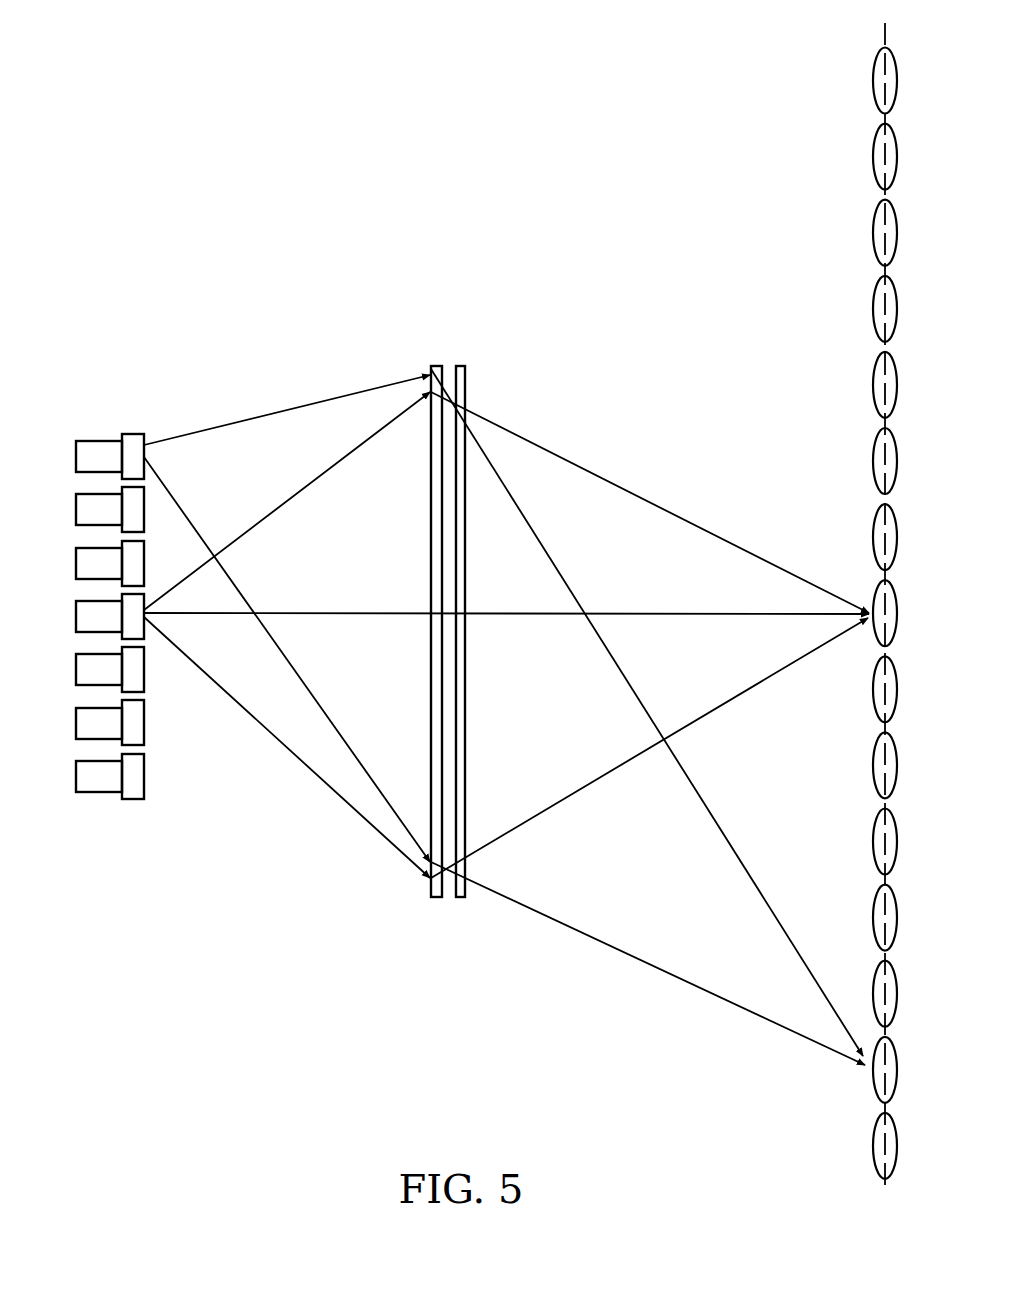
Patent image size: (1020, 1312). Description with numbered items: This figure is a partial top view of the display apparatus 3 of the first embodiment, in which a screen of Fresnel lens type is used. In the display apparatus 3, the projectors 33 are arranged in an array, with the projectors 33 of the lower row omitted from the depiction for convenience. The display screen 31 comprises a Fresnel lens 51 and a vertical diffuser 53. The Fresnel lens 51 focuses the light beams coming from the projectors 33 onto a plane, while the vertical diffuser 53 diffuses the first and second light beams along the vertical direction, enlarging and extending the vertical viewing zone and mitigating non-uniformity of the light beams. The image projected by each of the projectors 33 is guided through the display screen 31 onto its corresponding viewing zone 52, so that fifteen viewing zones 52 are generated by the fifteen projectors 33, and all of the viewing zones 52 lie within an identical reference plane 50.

The display apparatus 3 is at (60, 152).
The display screen 31 is at (473, 241).
The projectors 33 is at (126, 432).
The reference plane 50 is at (882, 32).
The Fresnel lens 51 is at (437, 364).
The viewing zone 52 is at (898, 80).
The vertical diffuser 53 is at (459, 364).